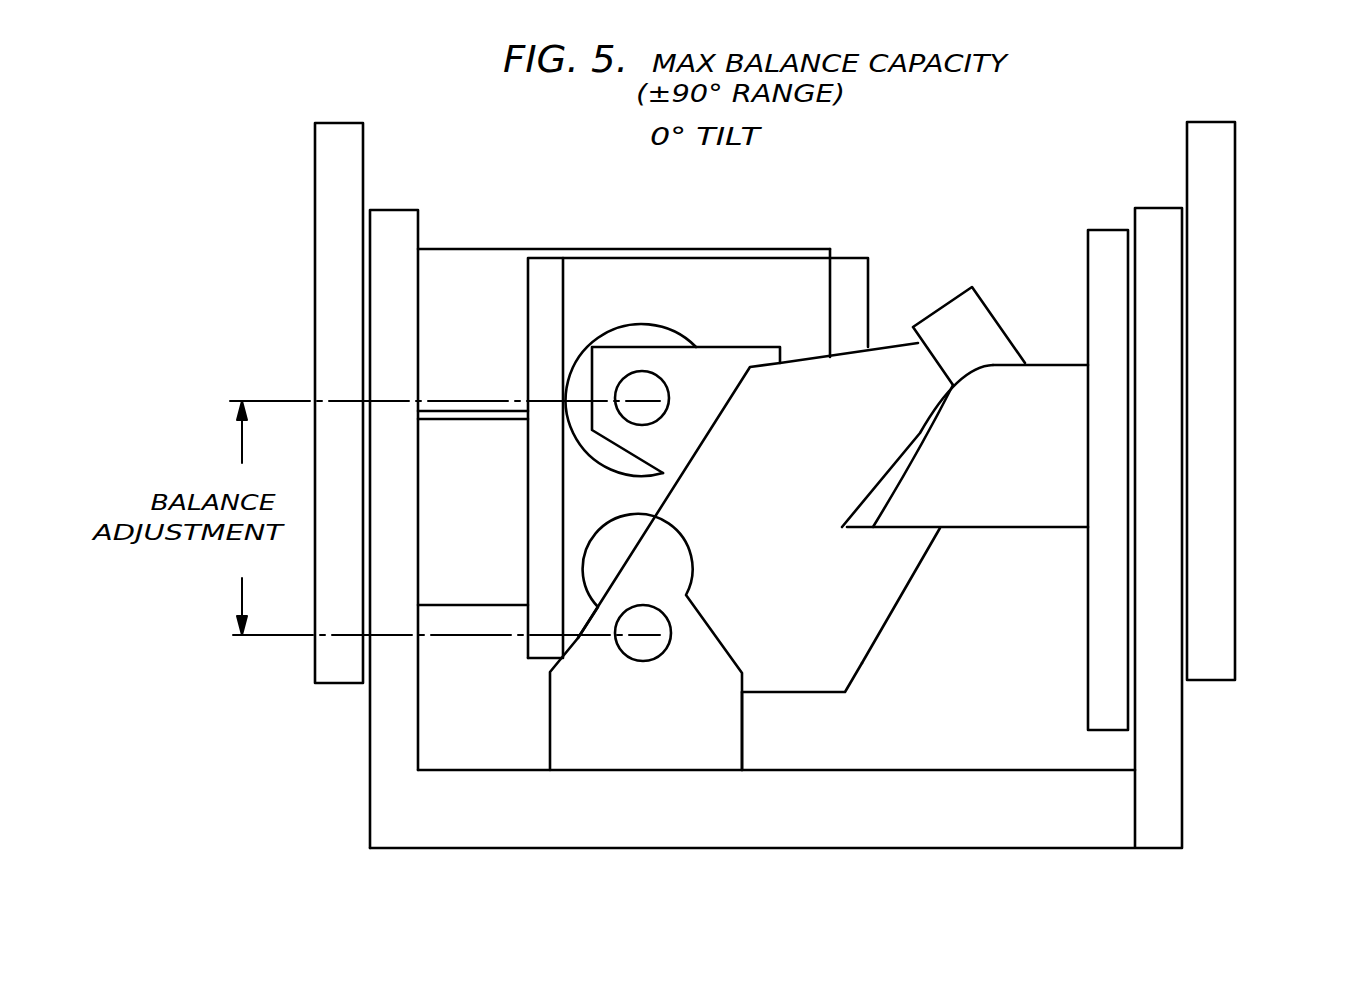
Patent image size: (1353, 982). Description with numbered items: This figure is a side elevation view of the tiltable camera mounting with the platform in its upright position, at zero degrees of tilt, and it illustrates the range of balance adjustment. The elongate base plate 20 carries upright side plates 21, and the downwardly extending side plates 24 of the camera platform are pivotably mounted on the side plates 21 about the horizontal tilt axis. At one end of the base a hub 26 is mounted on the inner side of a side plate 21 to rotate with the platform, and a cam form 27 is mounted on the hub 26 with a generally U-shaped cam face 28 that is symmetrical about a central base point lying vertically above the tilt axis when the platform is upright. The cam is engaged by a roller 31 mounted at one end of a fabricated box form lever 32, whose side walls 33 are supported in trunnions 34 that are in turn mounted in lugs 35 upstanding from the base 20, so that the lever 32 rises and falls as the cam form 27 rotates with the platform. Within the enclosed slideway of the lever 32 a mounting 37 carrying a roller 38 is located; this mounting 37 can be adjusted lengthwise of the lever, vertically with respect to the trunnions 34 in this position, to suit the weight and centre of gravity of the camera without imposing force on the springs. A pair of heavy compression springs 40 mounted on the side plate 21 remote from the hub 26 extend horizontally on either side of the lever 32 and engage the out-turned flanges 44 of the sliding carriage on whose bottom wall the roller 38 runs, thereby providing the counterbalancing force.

The base plate 20 is at (713, 833).
The side plates 21 is at (382, 747).
The side plates 24 is at (327, 185).
The hub 26 is at (1095, 262).
The cam form 27 is at (1007, 515).
The cam face 28 is at (873, 492).
The roller 31 is at (950, 313).
The box form lever 32 is at (858, 592).
The side walls 33 is at (828, 667).
The trunnions 34 is at (627, 652).
The lugs 35 is at (710, 737).
The mounting 37 is at (718, 358).
The roller 38 is at (608, 335).
The compression springs 40 is at (458, 265).
The out-turned flanges 44 is at (846, 277).